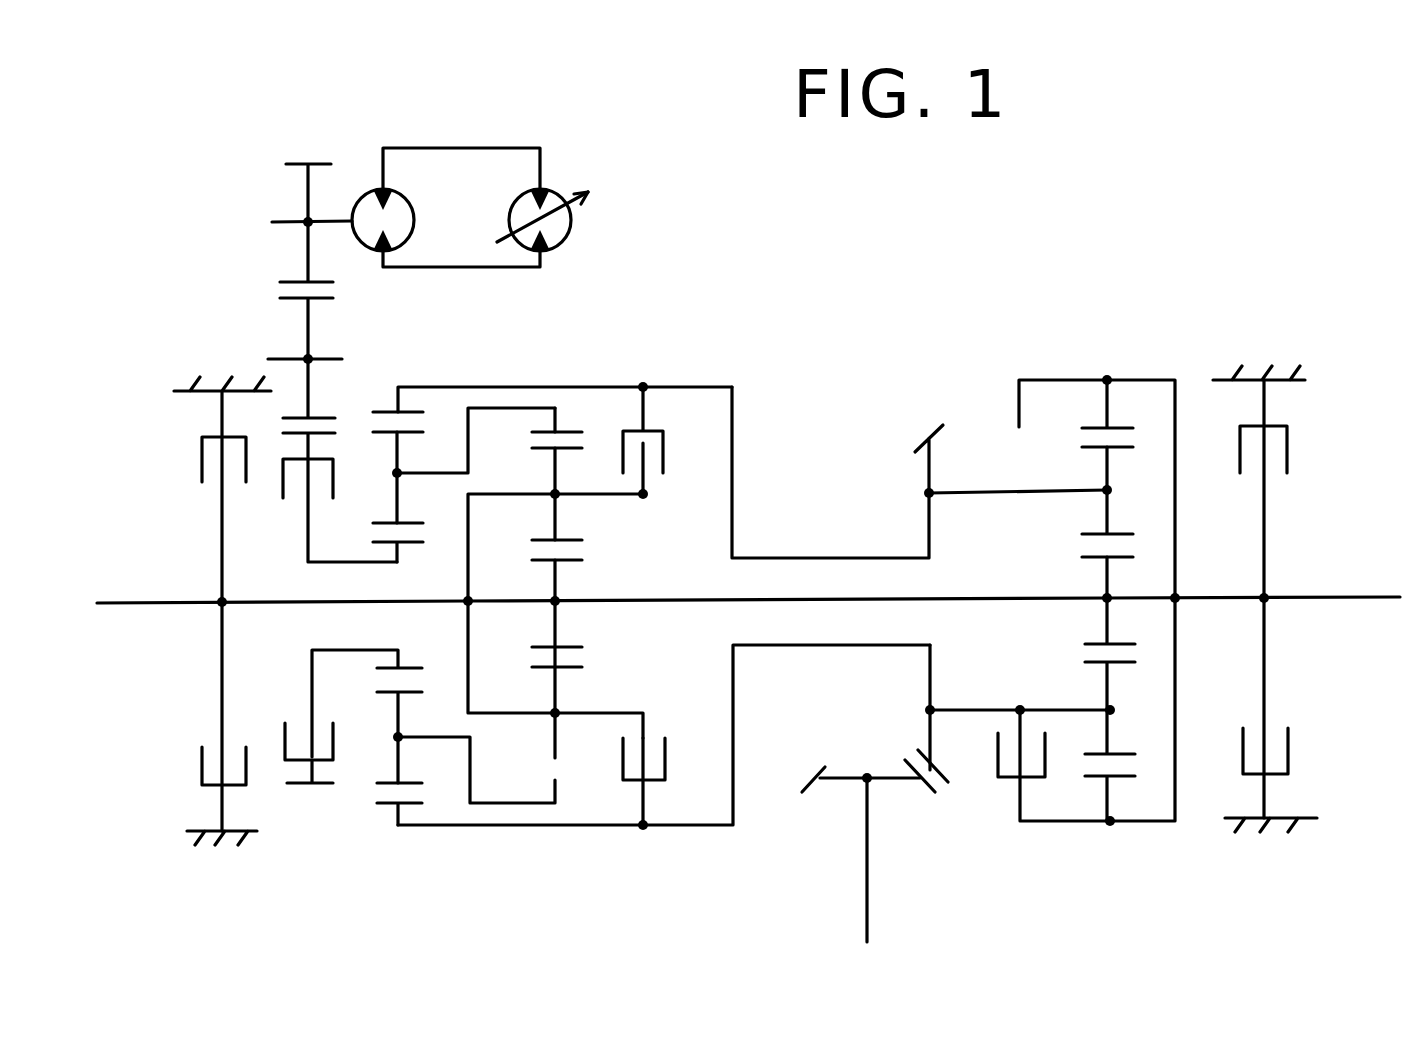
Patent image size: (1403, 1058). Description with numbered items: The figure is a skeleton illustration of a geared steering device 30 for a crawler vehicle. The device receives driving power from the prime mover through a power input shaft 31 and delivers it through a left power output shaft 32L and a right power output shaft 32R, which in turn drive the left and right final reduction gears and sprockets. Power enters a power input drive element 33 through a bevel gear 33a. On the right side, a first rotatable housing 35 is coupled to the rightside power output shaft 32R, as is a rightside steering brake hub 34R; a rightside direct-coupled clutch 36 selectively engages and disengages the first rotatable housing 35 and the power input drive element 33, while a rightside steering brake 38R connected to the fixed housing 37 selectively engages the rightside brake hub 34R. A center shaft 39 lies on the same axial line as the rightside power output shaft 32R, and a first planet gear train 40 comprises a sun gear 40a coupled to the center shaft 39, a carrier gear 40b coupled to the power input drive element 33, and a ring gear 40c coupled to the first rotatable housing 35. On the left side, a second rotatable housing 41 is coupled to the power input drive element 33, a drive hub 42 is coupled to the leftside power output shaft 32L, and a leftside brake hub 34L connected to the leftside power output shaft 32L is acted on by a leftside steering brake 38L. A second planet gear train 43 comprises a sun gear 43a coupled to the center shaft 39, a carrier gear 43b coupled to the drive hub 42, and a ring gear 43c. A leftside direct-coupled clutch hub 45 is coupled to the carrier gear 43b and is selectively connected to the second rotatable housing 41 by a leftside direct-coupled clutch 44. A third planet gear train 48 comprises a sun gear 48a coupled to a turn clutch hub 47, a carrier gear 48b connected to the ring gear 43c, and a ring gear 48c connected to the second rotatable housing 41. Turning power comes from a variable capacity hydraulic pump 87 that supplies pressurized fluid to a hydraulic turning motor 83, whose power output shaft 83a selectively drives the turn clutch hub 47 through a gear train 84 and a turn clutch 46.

The geared steering device 30 is at (855, 280).
The power input shaft 31 is at (868, 887).
The left power output shaft 32L is at (158, 609).
The right power output shaft 32R is at (1343, 598).
The power input drive element 33 is at (928, 695).
The bevel gear 33a is at (902, 770).
The leftside brake hub 34L is at (221, 509).
The rightside steering brake hub 34R is at (1265, 530).
The first rotatable housing 35 is at (1112, 378).
The rightside direct-coupled clutch 36 is at (997, 457).
The fixed housing 37 is at (210, 853).
The leftside steering brake 38L is at (201, 453).
The rightside steering brake 38R is at (1288, 444).
The center shaft 39 is at (773, 598).
The first planet gear train 40 is at (1085, 826).
The sun gear 40a is at (1107, 573).
The carrier gear 40b is at (1107, 467).
The ring gear 40c is at (1107, 412).
The second rotatable housing 41 is at (596, 828).
The drive hub 42 is at (468, 687).
The second planet gear train 43 is at (530, 848).
The sun gear 43a is at (557, 588).
The carrier gear 43b is at (557, 523).
The ring gear 43c is at (560, 418).
The leftside direct-coupled clutch 44 is at (665, 758).
The leftside direct-coupled clutch hub 45 is at (645, 732).
The turn clutch 46 is at (287, 747).
The turn clutch hub 47 is at (312, 700).
The third planet gear train 48 is at (420, 375).
The sun gear 48a is at (402, 548).
The carrier gear 48b is at (400, 492).
The ring gear 48c is at (396, 400).
The hydraulic turning motor 83 is at (405, 198).
The power output shaft 83a is at (283, 222).
The gear train 84 is at (266, 288).
The variable capacity hydraulic pump 87 is at (572, 222).